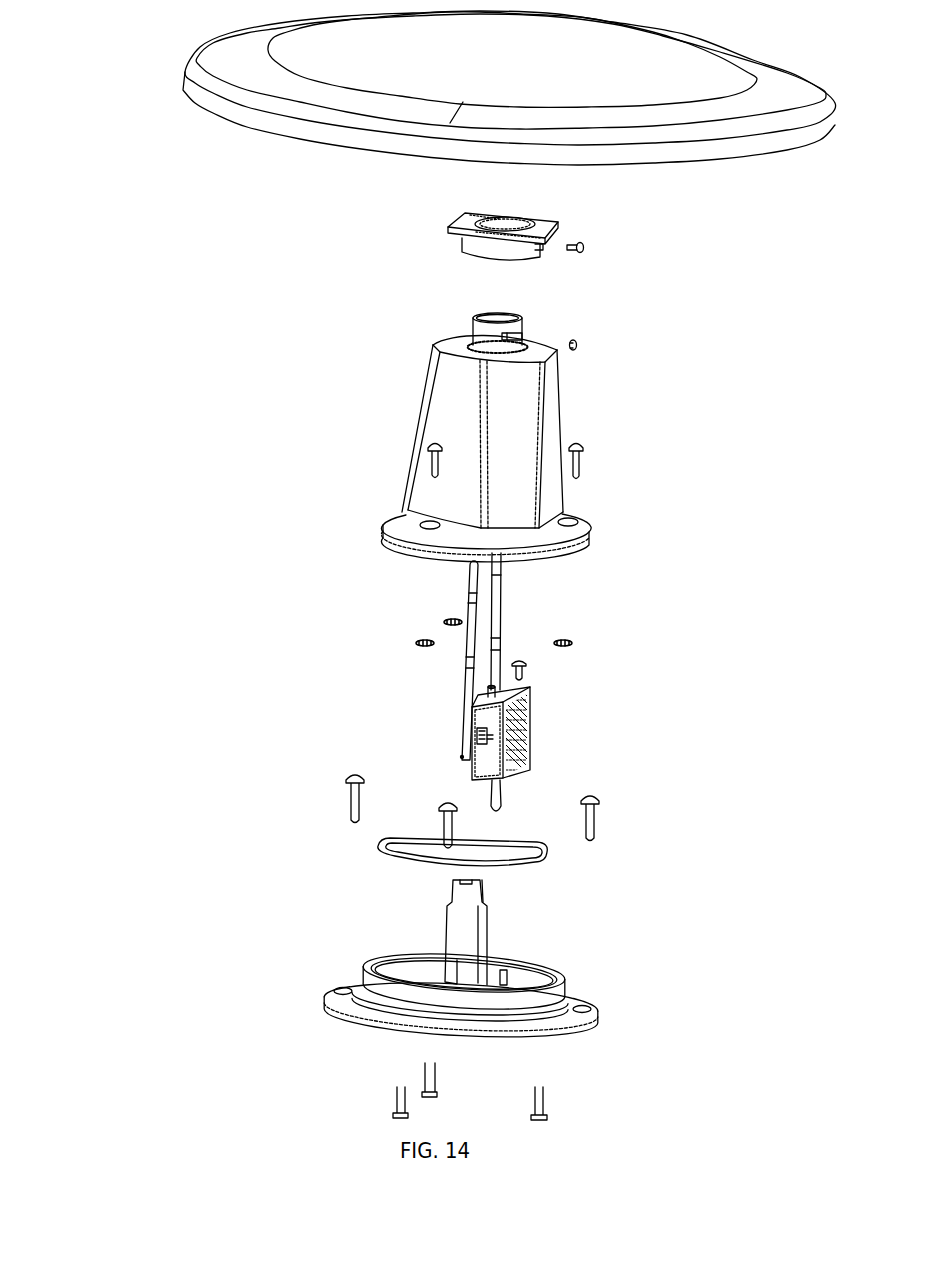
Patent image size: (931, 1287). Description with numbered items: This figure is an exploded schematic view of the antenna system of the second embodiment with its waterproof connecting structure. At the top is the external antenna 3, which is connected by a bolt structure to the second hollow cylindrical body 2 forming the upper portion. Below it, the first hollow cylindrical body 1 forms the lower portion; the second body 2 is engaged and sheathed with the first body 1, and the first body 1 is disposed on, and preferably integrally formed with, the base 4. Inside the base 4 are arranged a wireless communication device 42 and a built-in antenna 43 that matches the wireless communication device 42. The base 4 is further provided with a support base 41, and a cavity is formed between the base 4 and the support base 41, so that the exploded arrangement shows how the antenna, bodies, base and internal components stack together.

The first hollow cylindrical body 1 is at (473, 318).
The second hollow cylindrical body 2 is at (447, 230).
The external antenna 3 is at (183, 87).
The base 4 is at (414, 431).
The support base 41 is at (363, 965).
The wireless communication device 42 is at (533, 704).
The built-in antenna 43 is at (472, 592).